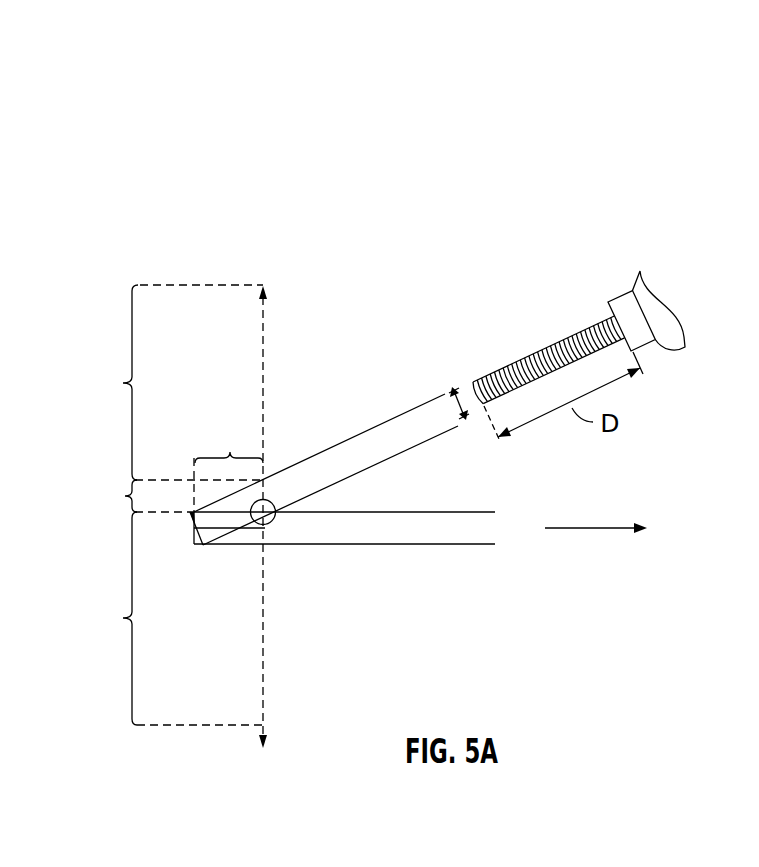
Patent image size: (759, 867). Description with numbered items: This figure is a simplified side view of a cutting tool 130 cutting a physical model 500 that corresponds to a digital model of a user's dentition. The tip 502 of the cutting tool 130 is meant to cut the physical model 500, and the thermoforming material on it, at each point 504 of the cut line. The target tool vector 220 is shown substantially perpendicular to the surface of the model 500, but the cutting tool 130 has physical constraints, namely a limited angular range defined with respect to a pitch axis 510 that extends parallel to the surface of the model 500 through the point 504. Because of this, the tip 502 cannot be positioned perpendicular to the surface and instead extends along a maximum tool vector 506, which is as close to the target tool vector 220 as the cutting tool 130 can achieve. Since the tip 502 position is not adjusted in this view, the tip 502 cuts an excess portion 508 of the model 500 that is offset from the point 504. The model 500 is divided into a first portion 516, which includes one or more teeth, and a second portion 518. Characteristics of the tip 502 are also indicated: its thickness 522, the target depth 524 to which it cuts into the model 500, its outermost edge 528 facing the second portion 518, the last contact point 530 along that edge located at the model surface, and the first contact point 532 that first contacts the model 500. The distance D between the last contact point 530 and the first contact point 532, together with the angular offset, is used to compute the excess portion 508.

The cutting tool 130 is at (579, 321).
The target tool vector 220 is at (378, 530).
The physical model 500 is at (186, 393).
The tip 502 is at (604, 327).
The point 504 is at (262, 524).
The maximum tool vector 506 is at (357, 455).
The excess portion 508 is at (112, 496).
The pitch axis 510 is at (262, 367).
The first portion 516 is at (108, 618).
The second portion 518 is at (109, 382).
The thickness 522 is at (452, 398).
The target depth 524 is at (228, 468).
The outermost edge 528 is at (508, 360).
The last contact point 530 is at (549, 346).
The first contact point 532 is at (467, 383).